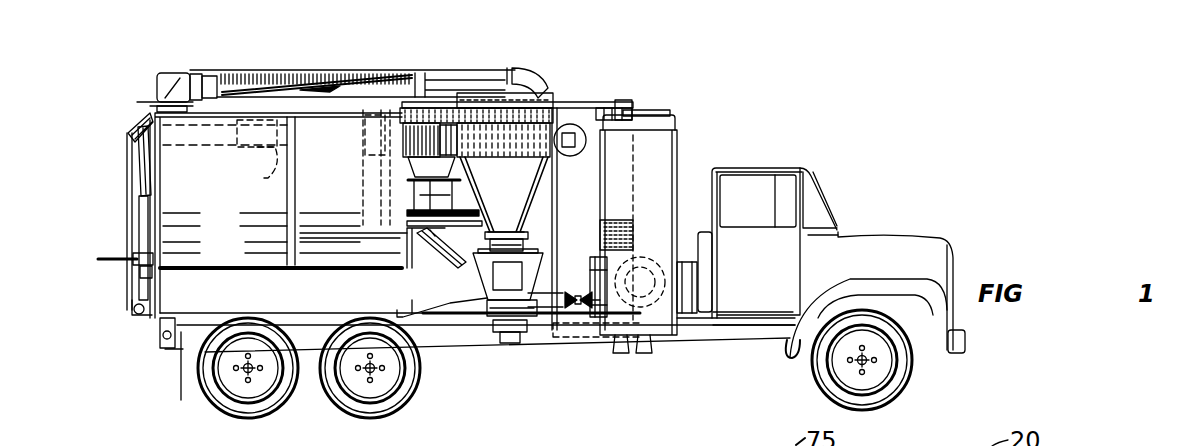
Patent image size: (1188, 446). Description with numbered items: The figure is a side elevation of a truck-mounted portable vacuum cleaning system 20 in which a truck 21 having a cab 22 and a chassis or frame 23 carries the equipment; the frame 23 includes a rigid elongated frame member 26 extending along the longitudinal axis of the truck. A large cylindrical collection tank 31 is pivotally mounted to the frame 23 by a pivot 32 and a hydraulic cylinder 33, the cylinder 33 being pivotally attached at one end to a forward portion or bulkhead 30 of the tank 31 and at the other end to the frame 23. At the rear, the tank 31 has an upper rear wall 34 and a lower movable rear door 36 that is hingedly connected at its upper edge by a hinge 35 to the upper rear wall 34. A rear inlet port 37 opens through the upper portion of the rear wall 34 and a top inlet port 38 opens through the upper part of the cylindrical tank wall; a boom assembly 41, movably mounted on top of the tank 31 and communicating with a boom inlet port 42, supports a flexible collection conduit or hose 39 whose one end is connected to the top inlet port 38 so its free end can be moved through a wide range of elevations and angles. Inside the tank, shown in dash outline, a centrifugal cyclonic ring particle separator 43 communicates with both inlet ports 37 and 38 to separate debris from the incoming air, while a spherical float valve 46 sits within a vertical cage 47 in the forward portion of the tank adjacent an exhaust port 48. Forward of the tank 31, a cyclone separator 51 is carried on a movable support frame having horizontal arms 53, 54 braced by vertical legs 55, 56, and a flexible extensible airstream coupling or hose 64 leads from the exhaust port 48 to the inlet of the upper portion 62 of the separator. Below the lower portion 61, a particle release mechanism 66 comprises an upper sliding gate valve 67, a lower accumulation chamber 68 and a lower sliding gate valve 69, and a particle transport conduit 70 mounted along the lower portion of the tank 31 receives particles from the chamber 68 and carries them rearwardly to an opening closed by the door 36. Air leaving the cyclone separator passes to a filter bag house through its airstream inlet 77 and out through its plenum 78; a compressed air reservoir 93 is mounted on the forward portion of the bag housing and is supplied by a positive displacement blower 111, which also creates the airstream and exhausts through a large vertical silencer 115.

The portable vacuum cleaning system 20 is at (603, 50).
The truck 21 is at (794, 151).
The cab 22 is at (878, 237).
The chassis or frame 23 is at (731, 345).
The frame member 26 is at (682, 340).
The forward portion or bulkhead 30 is at (419, 252).
The collection tank 31 is at (165, 212).
The pivot 32 is at (158, 327).
The hydraulic cylinder 33 is at (437, 250).
The upper rear wall 34 is at (160, 165).
The hinge 35 is at (137, 187).
The lower movable rear cover or door 36 is at (148, 272).
The rear inlet port 37 is at (132, 118).
The top inlet port 38 is at (167, 90).
The flexible collection conduit or hose 39 is at (241, 70).
The boom assembly 41 is at (300, 71).
The boom inlet port 42 is at (527, 76).
The centrifugal cyclonic ring particle separator 43 is at (273, 152).
The spherical float valve 46 is at (367, 192).
The vertical cage 47 is at (358, 150).
The exhaust port 48 is at (408, 115).
The cyclone separator 51 is at (548, 193).
The horizontal arm 53 is at (407, 213).
The horizontal arm 54 is at (393, 232).
The vertical leg 55 is at (455, 164).
The vertical leg 56 is at (455, 191).
The lower portion 61 is at (552, 200).
The upper portion 62 is at (556, 156).
The flexible, extensible airstream coupling or hose 64 is at (427, 126).
The particle release mechanism 66 is at (531, 263).
The upper sliding gate valve 67 is at (528, 240).
The lower accumulation chamber 68 is at (545, 290).
The lower sliding gate valve 69 is at (488, 335).
The particle transport conduit 70 is at (418, 315).
The airstream inlet 77 is at (473, 92).
The airstream outlet or plenum 78 is at (570, 110).
The compressed air reservoir 93 is at (597, 118).
The positive displacement blower 111 is at (597, 340).
The vertical silencer 115 is at (676, 152).